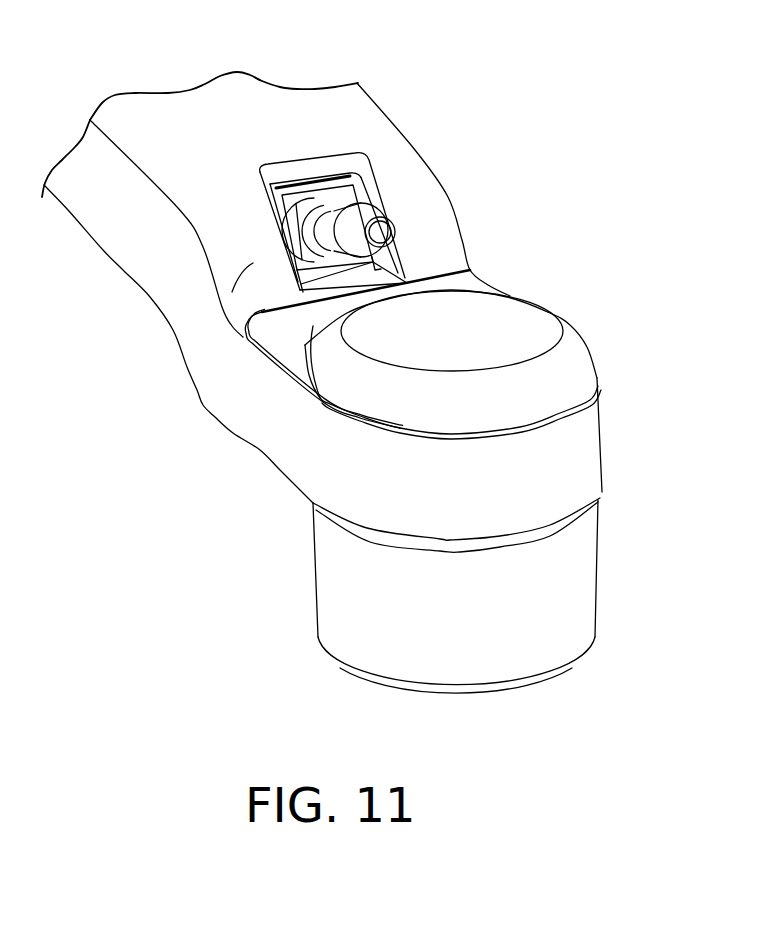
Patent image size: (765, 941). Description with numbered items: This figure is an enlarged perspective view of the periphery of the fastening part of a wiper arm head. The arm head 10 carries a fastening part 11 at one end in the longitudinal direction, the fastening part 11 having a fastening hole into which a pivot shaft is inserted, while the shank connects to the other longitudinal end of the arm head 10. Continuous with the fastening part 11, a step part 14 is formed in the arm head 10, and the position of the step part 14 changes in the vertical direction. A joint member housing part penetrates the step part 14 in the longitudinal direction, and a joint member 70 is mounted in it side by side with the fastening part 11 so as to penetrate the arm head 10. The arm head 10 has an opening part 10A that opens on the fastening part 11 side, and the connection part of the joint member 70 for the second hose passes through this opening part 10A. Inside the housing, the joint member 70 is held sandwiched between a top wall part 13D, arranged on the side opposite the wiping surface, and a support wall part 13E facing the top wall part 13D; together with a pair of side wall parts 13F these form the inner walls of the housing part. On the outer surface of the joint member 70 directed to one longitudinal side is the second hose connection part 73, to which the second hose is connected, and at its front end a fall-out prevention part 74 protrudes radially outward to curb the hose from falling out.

The arm head 10 is at (251, 110).
The fastening part 11 is at (575, 332).
The top wall part 13D is at (308, 175).
The support wall part 13E is at (270, 310).
The side wall parts 13F is at (388, 258).
The opening part 10A is at (370, 195).
The step part 14 is at (222, 303).
The joint member 70 is at (361, 191).
The second hose connection part 73 is at (338, 230).
The fall-out prevention part 74 is at (396, 230).